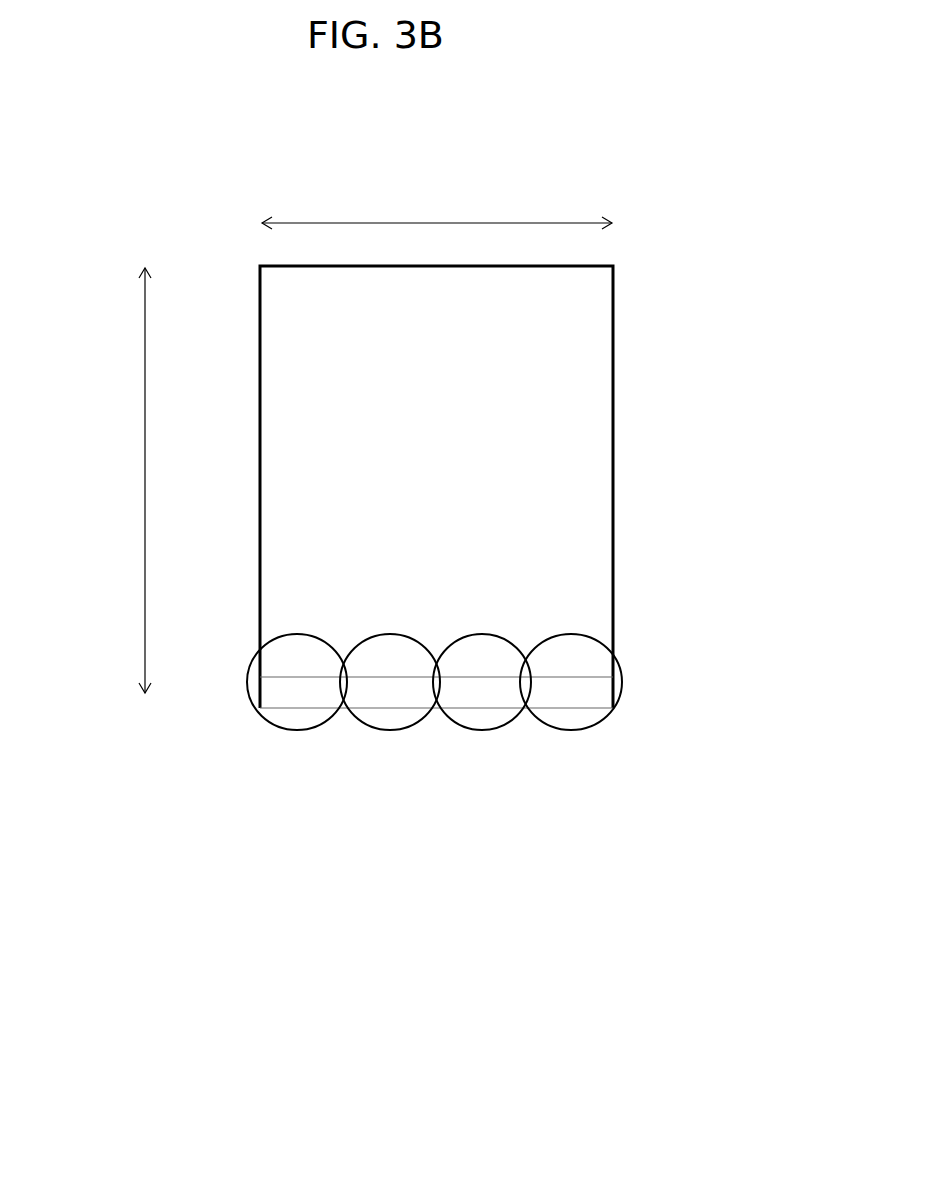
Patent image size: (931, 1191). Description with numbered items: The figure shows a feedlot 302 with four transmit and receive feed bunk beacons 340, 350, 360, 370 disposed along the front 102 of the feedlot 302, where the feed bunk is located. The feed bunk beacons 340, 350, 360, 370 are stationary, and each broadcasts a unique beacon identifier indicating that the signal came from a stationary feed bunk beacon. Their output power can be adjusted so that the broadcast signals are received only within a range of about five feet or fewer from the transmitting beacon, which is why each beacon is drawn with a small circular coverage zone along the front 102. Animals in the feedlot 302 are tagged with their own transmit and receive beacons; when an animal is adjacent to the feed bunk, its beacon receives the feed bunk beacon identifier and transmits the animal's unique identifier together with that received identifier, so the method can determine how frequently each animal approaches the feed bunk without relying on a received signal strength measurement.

The feedlot 302 is at (440, 875).
The feed bunk beacon 340 is at (258, 713).
The feed bunk beacon 350 is at (395, 690).
The feed bunk beacon 360 is at (490, 690).
The feed bunk beacon 370 is at (618, 710).
The front of feedlot 102 is at (302, 712).